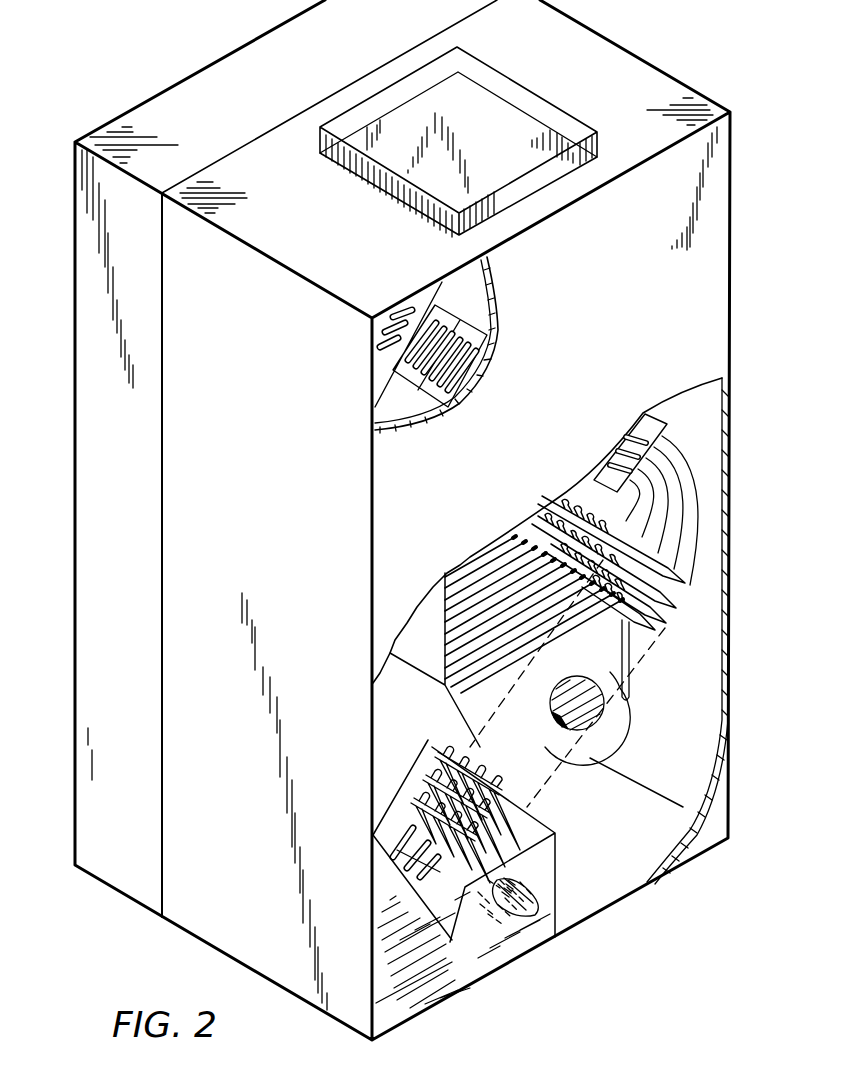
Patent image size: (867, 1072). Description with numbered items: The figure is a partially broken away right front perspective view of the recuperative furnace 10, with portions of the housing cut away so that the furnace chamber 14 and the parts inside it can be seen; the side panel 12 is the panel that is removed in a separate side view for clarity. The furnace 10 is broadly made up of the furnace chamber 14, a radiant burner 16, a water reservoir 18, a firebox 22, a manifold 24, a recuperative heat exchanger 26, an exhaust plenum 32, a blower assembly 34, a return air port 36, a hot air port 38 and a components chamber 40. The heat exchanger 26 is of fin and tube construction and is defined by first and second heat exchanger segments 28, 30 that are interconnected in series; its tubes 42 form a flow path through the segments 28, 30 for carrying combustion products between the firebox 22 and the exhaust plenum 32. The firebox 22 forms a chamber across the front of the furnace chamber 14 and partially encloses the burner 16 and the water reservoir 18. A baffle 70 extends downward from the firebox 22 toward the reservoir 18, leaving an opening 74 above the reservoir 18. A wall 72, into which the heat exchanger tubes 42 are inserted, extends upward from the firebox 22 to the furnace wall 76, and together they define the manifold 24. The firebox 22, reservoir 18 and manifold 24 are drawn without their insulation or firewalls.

The recuperative furnace 10 is at (740, 157).
The side panel 12 is at (705, 300).
The furnace chamber 14 is at (697, 667).
The radiant burner 16 is at (530, 887).
The water reservoir 18 is at (468, 980).
The firebox 22 is at (542, 862).
The manifold 24 is at (385, 868).
The recuperative heat exchanger 26 is at (715, 495).
The first heat exchanger segment 28 is at (682, 610).
The second heat exchanger segment 30 is at (669, 420).
The exhaust plenum 32 is at (382, 383).
The blower assembly 34 is at (604, 713).
The return air port 36 is at (505, 140).
The hot air port 38 is at (630, 688).
The components chamber 40 is at (92, 484).
The tubes 42 is at (384, 330).
The baffle 70 is at (400, 897).
The wall 72 is at (397, 828).
The opening 74 is at (480, 940).
The furnace wall 76 is at (224, 810).